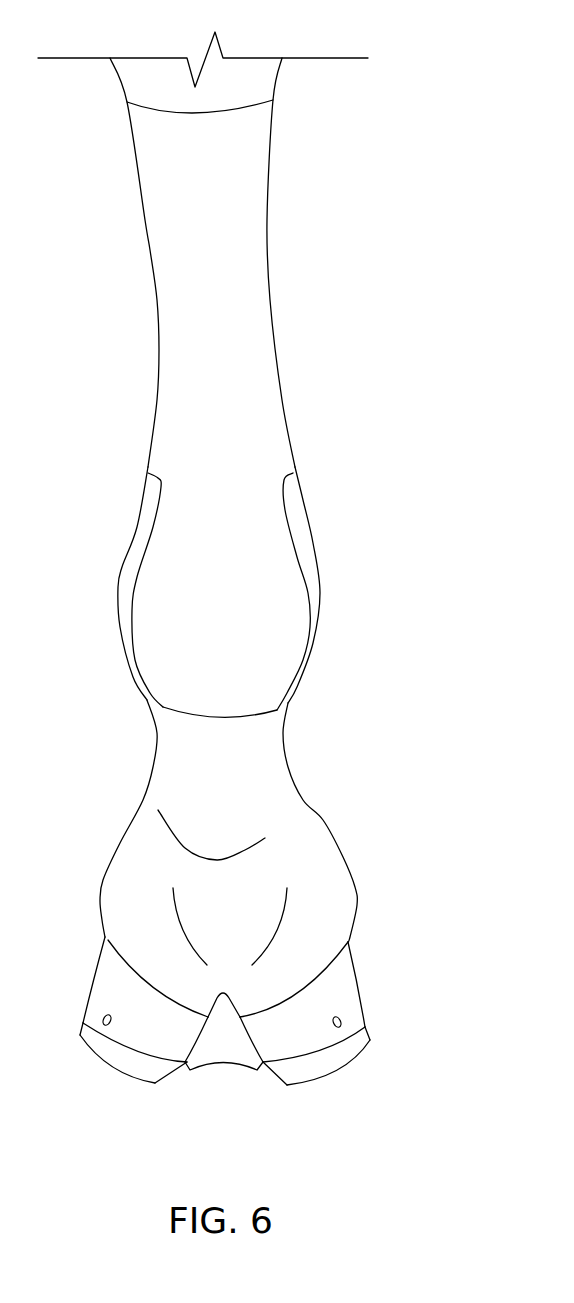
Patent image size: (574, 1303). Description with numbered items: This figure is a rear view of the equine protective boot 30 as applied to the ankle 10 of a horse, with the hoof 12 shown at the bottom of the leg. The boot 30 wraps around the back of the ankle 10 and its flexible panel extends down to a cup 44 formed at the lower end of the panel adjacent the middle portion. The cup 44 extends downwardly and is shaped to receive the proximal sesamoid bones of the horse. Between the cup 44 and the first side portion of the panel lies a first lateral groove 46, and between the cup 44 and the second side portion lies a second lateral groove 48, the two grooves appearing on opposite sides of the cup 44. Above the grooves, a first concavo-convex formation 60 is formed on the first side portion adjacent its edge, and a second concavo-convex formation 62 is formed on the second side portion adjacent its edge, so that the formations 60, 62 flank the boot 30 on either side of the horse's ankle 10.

The ankle 10 is at (343, 807).
The hoof 12 is at (352, 977).
The equine protective boot 30 is at (330, 166).
The cup 44 is at (268, 658).
The first lateral groove 46 is at (137, 530).
The second lateral groove 48 is at (292, 522).
The first concavo-convex formation 60 is at (118, 592).
The second concavo-convex formation 62 is at (320, 587).